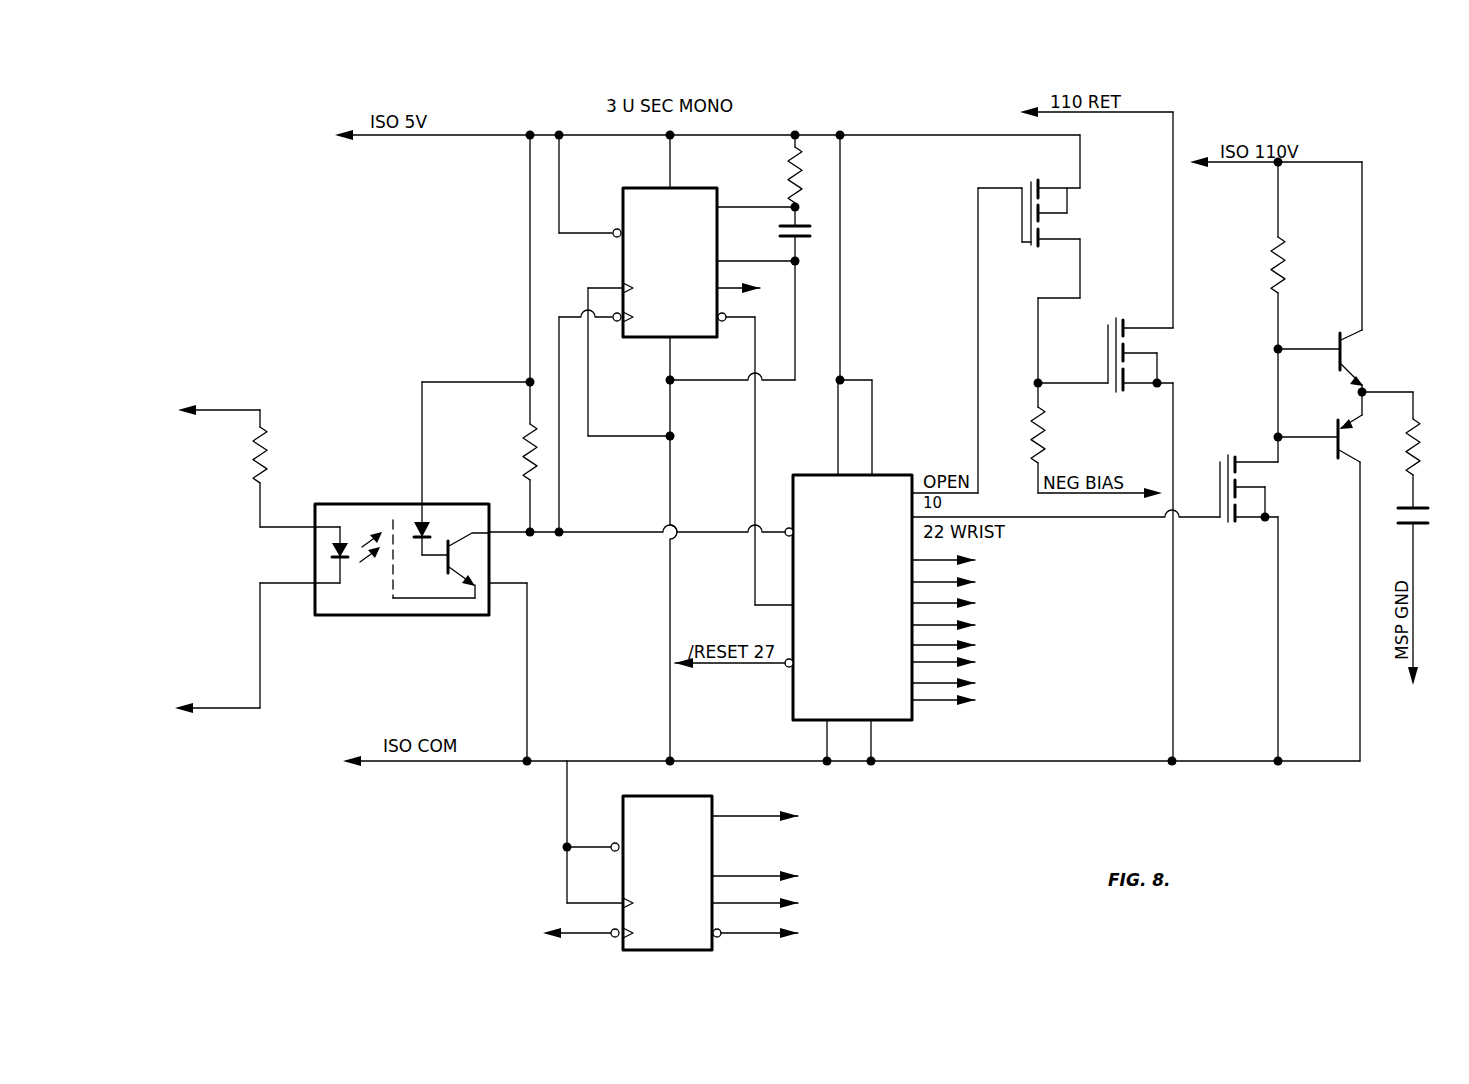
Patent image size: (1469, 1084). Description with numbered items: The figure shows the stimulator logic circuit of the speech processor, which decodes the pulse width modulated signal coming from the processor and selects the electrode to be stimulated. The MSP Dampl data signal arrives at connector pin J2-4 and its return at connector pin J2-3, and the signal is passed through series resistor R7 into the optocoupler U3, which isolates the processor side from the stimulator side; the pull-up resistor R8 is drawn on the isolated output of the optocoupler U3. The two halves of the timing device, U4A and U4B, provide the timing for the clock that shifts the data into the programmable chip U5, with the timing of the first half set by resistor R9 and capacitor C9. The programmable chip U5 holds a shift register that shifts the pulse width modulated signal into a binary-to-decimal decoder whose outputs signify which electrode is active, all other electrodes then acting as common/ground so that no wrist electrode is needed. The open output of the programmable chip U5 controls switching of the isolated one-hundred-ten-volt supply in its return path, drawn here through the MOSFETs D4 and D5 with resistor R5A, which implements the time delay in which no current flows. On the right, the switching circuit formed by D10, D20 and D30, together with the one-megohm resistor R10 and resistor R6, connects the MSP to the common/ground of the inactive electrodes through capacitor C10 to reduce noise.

The resistor 820 ohm R7 is at (281, 468).
The resistor 10K R8 is at (507, 452).
The resistor 3300 ohm R9 is at (786, 171).
The resistor 1M R10 is at (1301, 255).
The resistor 22K R5A is at (1058, 438).
The resistor 10K R6 is at (1434, 450).
The capacitor 1n C9 is at (809, 234).
The capacitor C10 is at (1398, 578).
The optocoupler U3 is at (402, 572).
The first section of timing circuit U4A is at (604, 258).
The second section of timing circuit U4B is at (604, 870).
The programmable chip U5 is at (912, 715).
The MOSFET ZVP0535 D4 is at (1029, 272).
The MOSFET ZVP0535 D5 is at (1105, 357).
The switching circuit transistor D10 is at (1232, 488).
The switching circuit transistor D20 is at (1371, 277).
The switching circuit transistor D30 is at (1337, 576).
The connector J2 pin 4 MSP DAMPL J2-4 is at (183, 411).
The connector J2 pin 3 MSP GND J2-3 is at (182, 708).